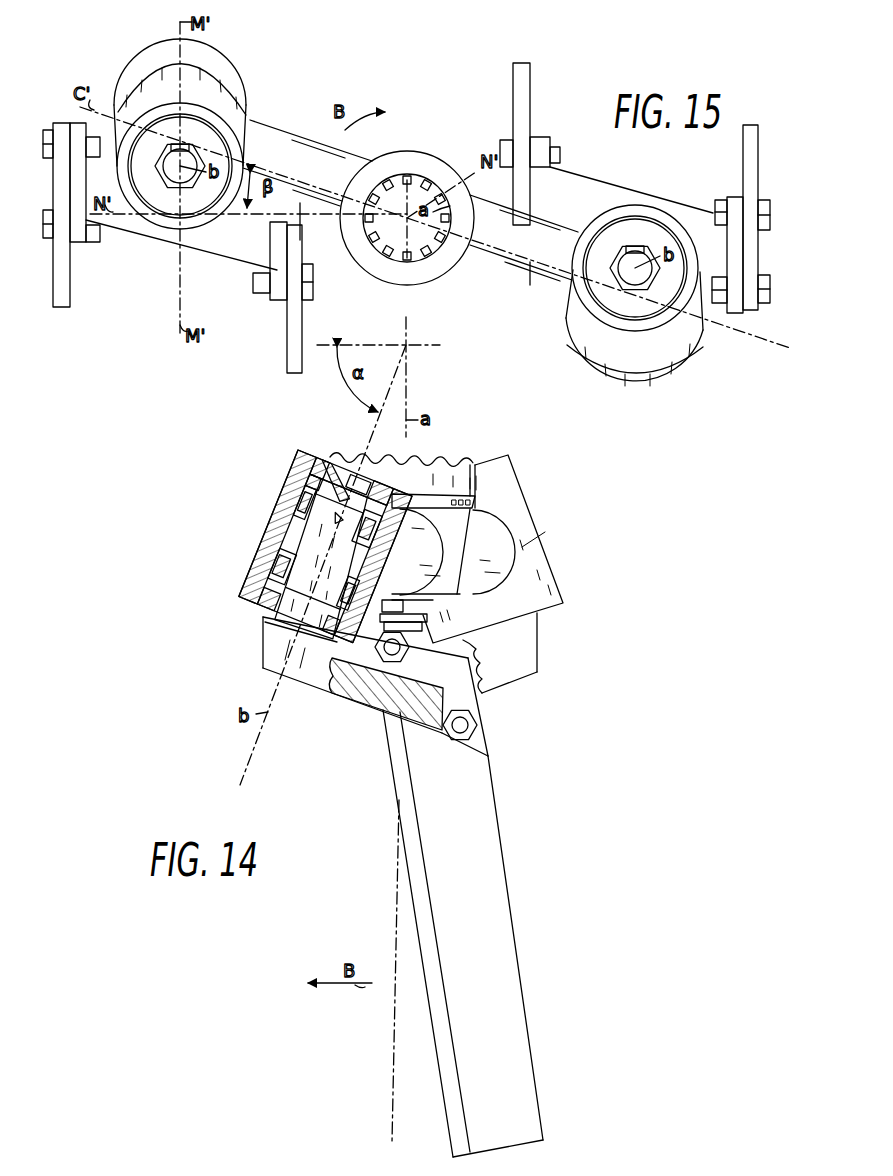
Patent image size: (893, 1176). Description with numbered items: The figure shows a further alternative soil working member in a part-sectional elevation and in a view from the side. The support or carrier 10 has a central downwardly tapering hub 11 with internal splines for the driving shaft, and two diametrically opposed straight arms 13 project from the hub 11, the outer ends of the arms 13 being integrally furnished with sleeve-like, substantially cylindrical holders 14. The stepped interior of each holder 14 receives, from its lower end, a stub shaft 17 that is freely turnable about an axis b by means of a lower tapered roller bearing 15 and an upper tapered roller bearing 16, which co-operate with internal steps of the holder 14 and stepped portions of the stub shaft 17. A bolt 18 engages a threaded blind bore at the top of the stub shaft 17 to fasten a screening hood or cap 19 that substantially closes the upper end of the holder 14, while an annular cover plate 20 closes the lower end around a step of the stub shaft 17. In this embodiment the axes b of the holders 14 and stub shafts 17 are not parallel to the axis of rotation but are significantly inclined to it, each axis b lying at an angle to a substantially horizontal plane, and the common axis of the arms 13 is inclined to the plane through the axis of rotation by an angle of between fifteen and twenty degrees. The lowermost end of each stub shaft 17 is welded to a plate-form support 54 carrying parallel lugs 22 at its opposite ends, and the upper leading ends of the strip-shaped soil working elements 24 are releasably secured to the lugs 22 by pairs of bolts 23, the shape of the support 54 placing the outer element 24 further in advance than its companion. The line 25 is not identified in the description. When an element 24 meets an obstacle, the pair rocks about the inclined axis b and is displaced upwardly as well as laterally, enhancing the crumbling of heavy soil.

In FIG. 15, the support or carrier 10 is at (470, 285).
In FIG. 15, the hub 11 is at (450, 154).
In FIG. 14, the hub 11 is at (472, 503).
In FIG. 15, the arm 13 is at (306, 232).
In FIG. 14, the arm 13 is at (438, 545).
In FIG. 15, the holder 14 is at (232, 84).
In FIG. 14, the holder 14 is at (268, 522).
In FIG. 14, the lower tapered roller bearing 15 is at (252, 571).
In FIG. 14, the upper tapered roller bearing 16 is at (300, 478).
In FIG. 14, the stub shaft 17 is at (300, 520).
In FIG. 15, the bolt 18 is at (165, 175).
In FIG. 14, the bolt 18 is at (355, 452).
In FIG. 15, the screening hood or cap 19 is at (218, 152).
In FIG. 14, the screening hood or cap 19 is at (326, 452).
In FIG. 14, the annular cover plate 20 is at (262, 612).
In FIG. 15, the lug 22 is at (78, 242).
In FIG. 15, the bolt 23 is at (100, 240).
In FIG. 14, the bolt 23 is at (412, 660).
In FIG. 15, the soil working element 24 is at (62, 308).
In FIG. 14, the soil working element 24 is at (505, 890).
In FIG. 14, the plate edge 25 is at (447, 1092).
In FIG. 15, the support 54 is at (220, 264).
In FIG. 14, the support 54 is at (528, 678).